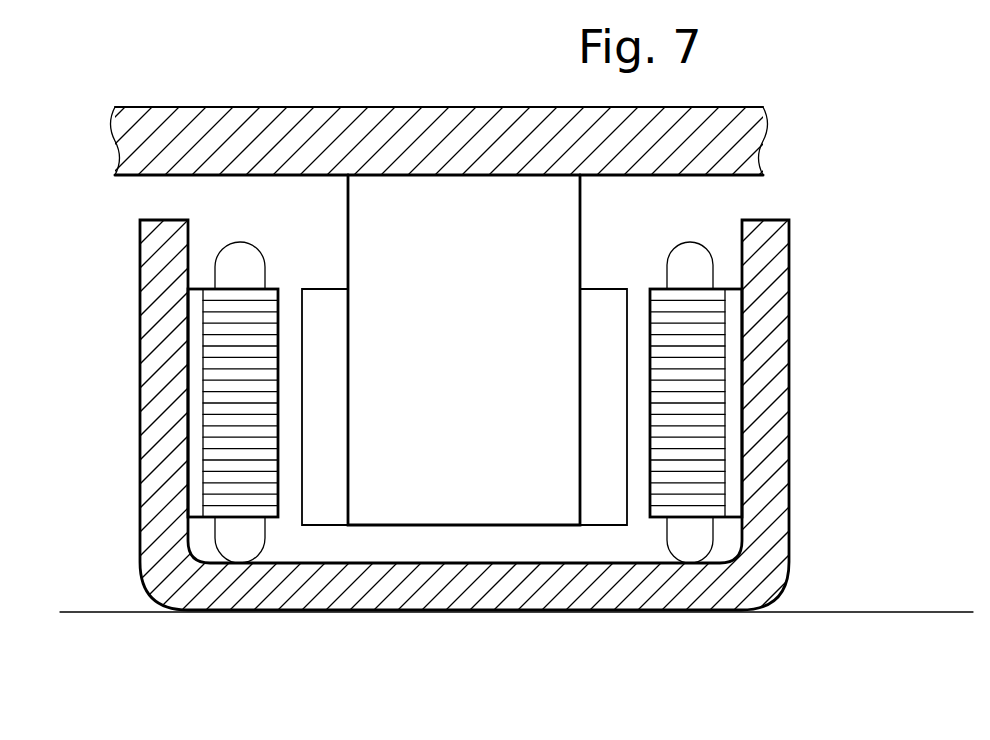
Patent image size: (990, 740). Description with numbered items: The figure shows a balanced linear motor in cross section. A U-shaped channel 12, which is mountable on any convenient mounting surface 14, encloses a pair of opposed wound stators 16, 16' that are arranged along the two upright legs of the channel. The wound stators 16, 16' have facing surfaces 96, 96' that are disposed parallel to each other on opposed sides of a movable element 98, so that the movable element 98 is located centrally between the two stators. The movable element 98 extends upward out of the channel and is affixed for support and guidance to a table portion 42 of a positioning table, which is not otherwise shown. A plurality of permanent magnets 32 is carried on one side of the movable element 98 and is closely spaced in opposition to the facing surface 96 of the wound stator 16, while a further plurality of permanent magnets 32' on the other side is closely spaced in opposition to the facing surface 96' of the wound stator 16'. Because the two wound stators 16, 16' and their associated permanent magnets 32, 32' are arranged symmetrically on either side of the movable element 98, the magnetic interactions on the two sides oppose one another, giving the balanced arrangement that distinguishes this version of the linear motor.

The table portion 42 is at (392, 128).
The U-shaped channel 12 is at (778, 249).
The mounting surface 14 is at (903, 615).
The movable element 98 is at (448, 497).
The permanent magnets 32 is at (320, 361).
The permanent magnets 32' is at (616, 359).
The wound stator 16 is at (160, 379).
The wound stator 16' is at (780, 379).
The facing surface 96 is at (264, 599).
The facing surface 96' is at (652, 592).